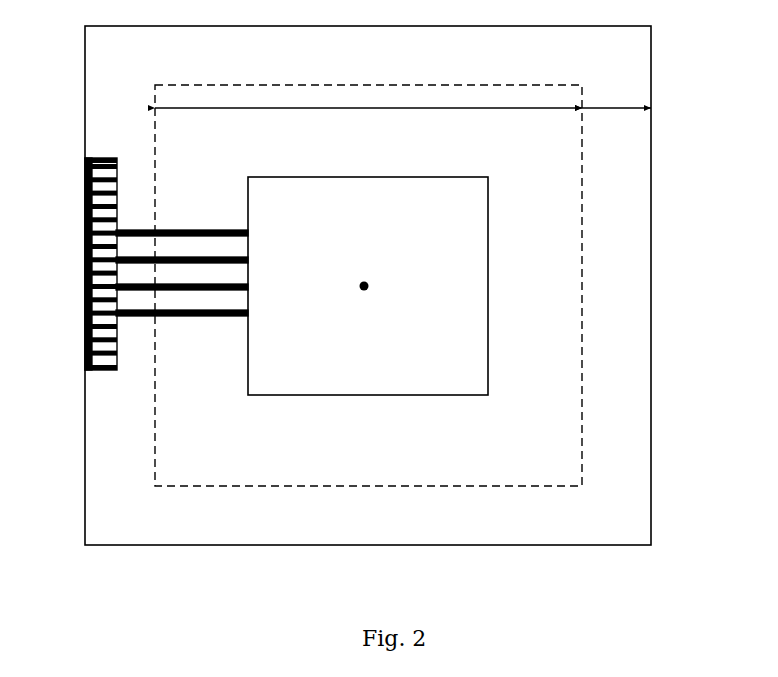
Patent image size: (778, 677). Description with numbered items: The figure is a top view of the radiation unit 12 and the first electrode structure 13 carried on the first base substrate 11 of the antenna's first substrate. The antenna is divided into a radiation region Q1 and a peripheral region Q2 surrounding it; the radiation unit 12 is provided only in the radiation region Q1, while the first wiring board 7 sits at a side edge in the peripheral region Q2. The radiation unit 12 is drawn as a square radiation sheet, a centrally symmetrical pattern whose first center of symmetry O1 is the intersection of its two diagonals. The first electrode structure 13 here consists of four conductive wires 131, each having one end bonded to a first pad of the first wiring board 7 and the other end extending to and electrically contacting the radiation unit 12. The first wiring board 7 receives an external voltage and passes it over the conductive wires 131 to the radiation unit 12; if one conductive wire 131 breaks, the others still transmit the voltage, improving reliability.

The first wiring board 7 is at (85, 203).
The first base substrate 11 is at (617, 470).
The radiation unit 12 is at (467, 352).
The first electrode structure 13 is at (172, 230).
The conductive wire 131 is at (182, 243).
The first center of symmetry O1 is at (380, 277).
The radiation region Q1 is at (368, 285).
The peripheral region Q2 is at (616, 119).